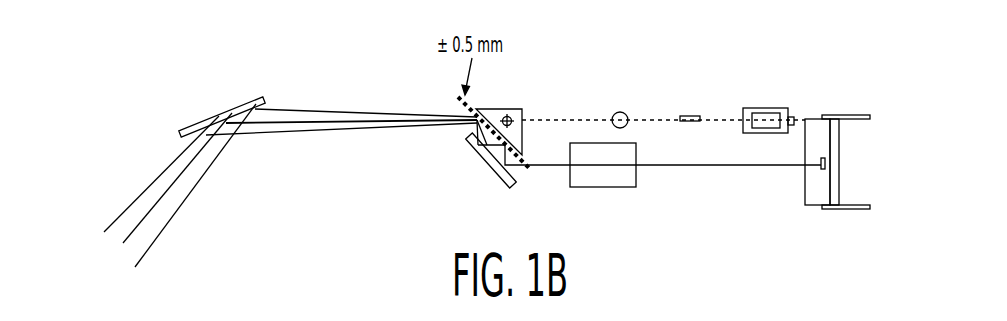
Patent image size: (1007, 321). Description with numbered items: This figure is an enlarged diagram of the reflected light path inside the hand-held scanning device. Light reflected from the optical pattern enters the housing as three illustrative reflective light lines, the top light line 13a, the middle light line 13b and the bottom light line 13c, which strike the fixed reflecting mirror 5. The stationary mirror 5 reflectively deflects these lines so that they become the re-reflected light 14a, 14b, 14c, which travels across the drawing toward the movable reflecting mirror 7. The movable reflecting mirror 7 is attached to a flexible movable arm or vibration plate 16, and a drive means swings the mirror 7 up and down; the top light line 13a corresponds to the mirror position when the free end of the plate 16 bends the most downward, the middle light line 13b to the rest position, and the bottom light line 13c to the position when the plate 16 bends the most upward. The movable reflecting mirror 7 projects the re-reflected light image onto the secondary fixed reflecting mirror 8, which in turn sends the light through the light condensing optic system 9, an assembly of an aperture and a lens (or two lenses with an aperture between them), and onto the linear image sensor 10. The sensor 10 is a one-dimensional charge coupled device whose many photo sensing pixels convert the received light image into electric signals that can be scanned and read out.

The fixed reflecting mirror 5 is at (239, 103).
The top light line 13a is at (150, 184).
The middle light line 13b is at (126, 247).
The bottom light line 13c is at (173, 218).
The re-reflected light 14a is at (332, 134).
The re-reflected light 14b is at (330, 121).
The re-reflected light 14c is at (373, 113).
The movable reflecting mirror 7 is at (510, 107).
The secondary fixed reflecting mirror 8 is at (485, 162).
The flexible movable arm 16 is at (582, 120).
The light condensing optic system 9 is at (615, 185).
The linear image sensor 10 is at (812, 200).